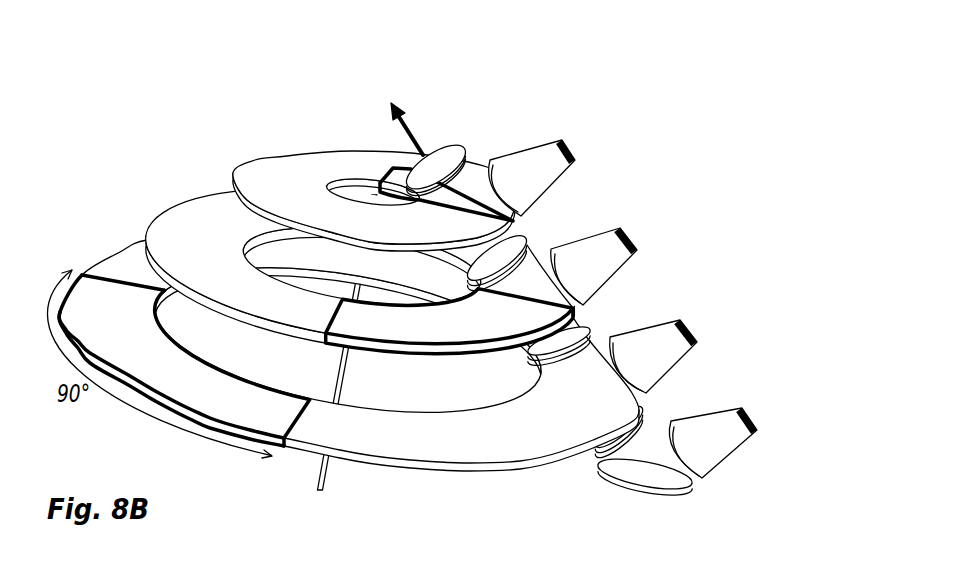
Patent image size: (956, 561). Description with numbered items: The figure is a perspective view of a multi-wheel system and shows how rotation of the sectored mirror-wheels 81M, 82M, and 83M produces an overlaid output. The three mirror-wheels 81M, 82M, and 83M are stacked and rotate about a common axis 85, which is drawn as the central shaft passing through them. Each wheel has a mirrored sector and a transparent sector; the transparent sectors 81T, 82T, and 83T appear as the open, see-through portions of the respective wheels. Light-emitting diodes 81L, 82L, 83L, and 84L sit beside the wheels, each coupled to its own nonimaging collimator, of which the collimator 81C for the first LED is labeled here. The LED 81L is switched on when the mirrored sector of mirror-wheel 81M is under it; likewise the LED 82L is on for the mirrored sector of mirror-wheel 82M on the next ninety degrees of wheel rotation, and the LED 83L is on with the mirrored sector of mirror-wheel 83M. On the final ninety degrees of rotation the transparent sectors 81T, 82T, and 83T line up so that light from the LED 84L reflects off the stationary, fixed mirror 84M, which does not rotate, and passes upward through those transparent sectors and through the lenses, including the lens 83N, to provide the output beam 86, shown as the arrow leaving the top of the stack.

The transparent sector 81T is at (282, 175).
The transparent sector 82T is at (202, 238).
The transparent sector 83T is at (510, 437).
The sectored mirror-wheel 81M is at (457, 200).
The sectored mirror-wheel 82M is at (438, 332).
The sectored mirror-wheel 83M is at (137, 357).
The fixed mirror 84M is at (622, 495).
The LED 81L is at (549, 174).
The LED 82L is at (612, 244).
The LED 83L is at (671, 352).
The LED 84L is at (730, 434).
The nonimaging collimator 81C is at (588, 255).
The lens 83N is at (588, 327).
The common axis 85 is at (330, 484).
The output beam 86 is at (385, 125).